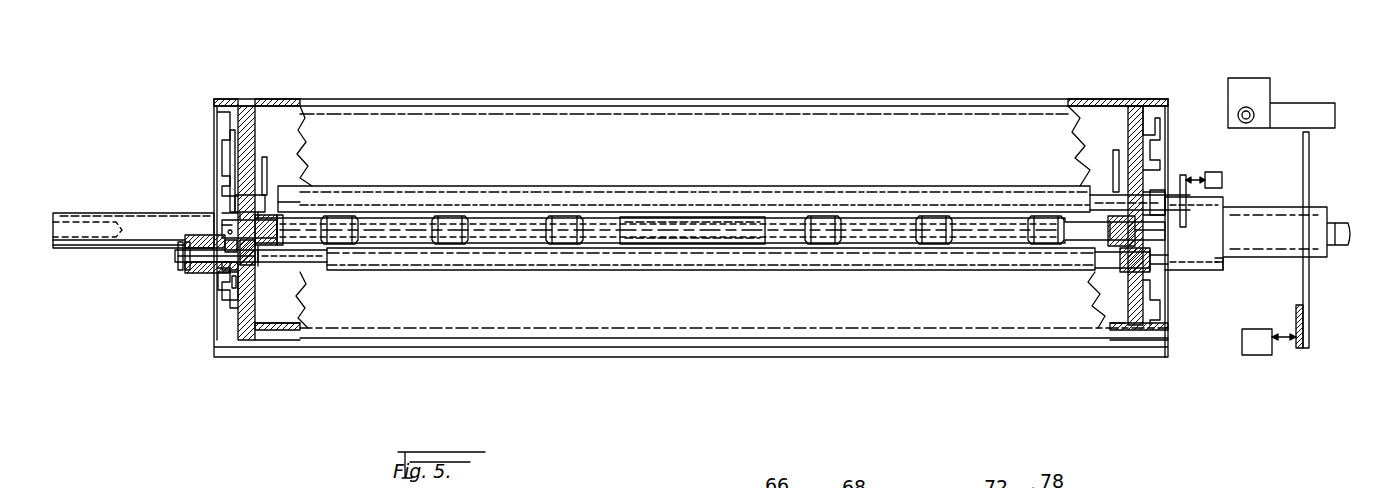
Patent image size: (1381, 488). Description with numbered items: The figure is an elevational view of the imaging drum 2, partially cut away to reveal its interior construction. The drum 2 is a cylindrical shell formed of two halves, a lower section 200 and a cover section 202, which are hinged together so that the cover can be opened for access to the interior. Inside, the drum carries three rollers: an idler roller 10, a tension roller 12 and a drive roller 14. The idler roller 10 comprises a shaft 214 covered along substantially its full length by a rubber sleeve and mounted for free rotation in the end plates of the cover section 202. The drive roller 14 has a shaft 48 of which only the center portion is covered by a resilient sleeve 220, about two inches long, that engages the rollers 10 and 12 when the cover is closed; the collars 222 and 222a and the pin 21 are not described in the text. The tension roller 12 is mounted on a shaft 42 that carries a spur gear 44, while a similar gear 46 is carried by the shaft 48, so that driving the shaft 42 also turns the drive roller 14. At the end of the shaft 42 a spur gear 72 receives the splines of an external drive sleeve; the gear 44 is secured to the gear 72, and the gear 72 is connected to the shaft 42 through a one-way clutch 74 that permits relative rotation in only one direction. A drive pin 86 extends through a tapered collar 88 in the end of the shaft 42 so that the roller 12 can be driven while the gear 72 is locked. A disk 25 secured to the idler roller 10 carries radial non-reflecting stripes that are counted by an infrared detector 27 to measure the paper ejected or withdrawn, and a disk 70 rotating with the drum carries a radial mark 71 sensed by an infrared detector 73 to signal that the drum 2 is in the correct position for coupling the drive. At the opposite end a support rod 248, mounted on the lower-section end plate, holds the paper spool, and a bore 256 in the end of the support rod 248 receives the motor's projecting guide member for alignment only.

The rotatable drum 2 is at (955, 93).
The idler roller 10 is at (555, 190).
The tension roller 12 is at (395, 266).
The drive roller 14 is at (650, 212).
The pin 21 is at (266, 157).
The disk 25 is at (1185, 176).
The infrared detector 27 is at (1222, 180).
The shaft 42 is at (265, 258).
The spur gear 44 is at (230, 272).
The gear 46 is at (235, 220).
The shaft 48 is at (262, 230).
The disk 70 is at (1310, 328).
The radial mark 71 is at (1302, 348).
The spur gear 72 is at (200, 236).
The infrared detector 73 is at (1258, 355).
The one-way clutch 74 is at (195, 271).
The drive pin 86 is at (178, 252).
The collar 88 is at (178, 262).
The lower section 200 is at (455, 360).
The cover section 202 is at (555, 100).
The shaft 214 is at (1100, 195).
The resilient sleeve 220 is at (710, 225).
The collar 222 is at (455, 244).
The collar 222a is at (1040, 222).
The support rod 248 is at (95, 213).
The bore 256 is at (95, 244).